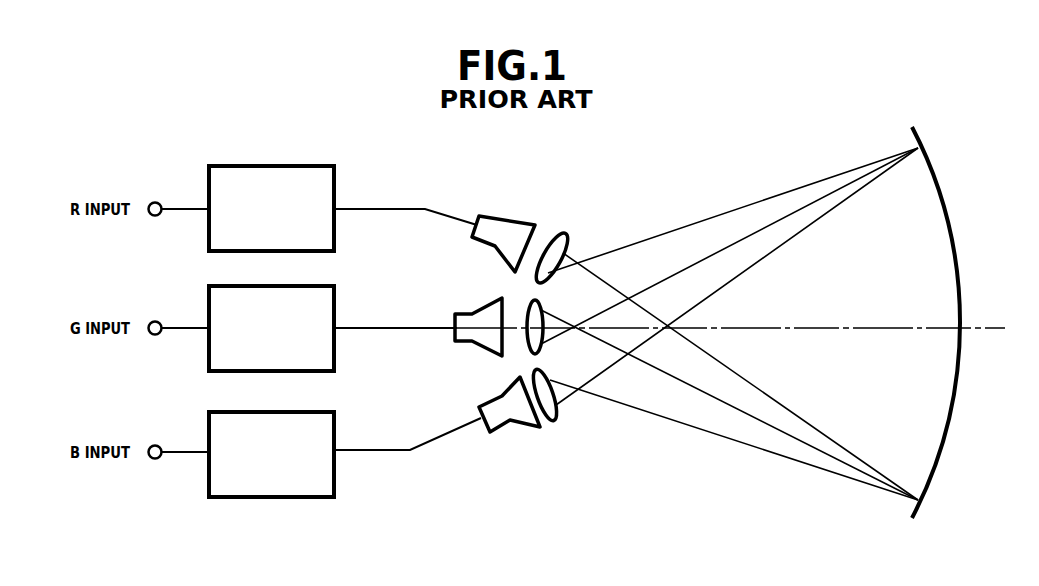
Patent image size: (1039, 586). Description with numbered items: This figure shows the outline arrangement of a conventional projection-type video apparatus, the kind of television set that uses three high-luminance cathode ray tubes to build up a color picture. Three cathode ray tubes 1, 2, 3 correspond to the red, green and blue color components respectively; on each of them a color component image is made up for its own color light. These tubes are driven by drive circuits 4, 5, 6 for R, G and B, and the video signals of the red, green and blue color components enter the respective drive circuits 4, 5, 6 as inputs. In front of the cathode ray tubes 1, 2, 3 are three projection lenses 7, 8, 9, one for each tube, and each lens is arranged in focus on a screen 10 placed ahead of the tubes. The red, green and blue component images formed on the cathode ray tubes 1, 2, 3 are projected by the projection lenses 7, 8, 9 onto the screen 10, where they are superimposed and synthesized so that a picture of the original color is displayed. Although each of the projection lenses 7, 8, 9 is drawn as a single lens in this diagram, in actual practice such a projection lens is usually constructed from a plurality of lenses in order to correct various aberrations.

The cathode ray tube 1 is at (499, 220).
The cathode ray tube 2 is at (468, 313).
The cathode ray tube 3 is at (486, 407).
The drive circuit 4 is at (320, 165).
The drive circuit 5 is at (336, 303).
The drive circuit 6 is at (336, 432).
The projection lens 7 is at (567, 238).
The projection lens 8 is at (544, 307).
The projection lens 9 is at (552, 418).
The screen 10 is at (947, 202).